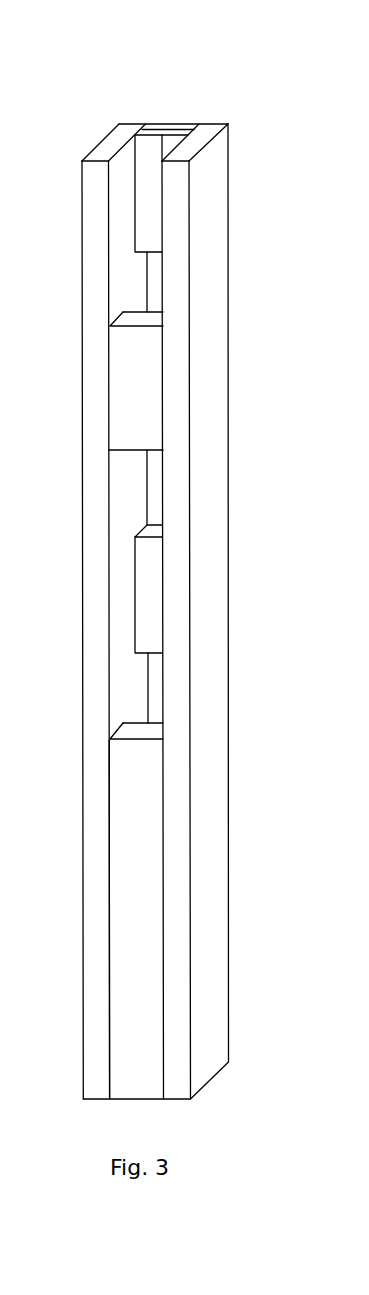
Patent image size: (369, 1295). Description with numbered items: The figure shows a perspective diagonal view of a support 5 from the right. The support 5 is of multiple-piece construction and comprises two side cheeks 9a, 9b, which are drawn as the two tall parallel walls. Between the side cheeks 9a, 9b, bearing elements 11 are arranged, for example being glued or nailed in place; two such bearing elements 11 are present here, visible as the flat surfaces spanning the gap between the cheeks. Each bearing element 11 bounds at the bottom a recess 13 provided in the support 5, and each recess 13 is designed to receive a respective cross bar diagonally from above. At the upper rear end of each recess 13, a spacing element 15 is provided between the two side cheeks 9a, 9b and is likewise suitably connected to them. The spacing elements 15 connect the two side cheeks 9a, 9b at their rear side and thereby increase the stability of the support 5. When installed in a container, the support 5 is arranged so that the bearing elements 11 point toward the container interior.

The support 5 is at (102, 72).
The side cheek 9a is at (108, 150).
The side cheek 9b is at (208, 135).
The bearing element 11 is at (123, 373).
The recess 13 is at (120, 297).
The spacing element 15 is at (167, 134).